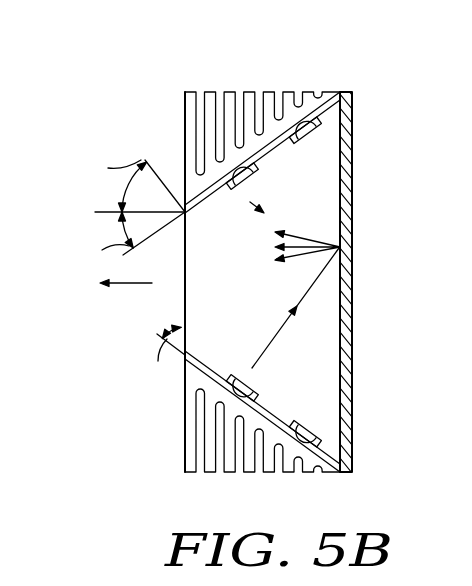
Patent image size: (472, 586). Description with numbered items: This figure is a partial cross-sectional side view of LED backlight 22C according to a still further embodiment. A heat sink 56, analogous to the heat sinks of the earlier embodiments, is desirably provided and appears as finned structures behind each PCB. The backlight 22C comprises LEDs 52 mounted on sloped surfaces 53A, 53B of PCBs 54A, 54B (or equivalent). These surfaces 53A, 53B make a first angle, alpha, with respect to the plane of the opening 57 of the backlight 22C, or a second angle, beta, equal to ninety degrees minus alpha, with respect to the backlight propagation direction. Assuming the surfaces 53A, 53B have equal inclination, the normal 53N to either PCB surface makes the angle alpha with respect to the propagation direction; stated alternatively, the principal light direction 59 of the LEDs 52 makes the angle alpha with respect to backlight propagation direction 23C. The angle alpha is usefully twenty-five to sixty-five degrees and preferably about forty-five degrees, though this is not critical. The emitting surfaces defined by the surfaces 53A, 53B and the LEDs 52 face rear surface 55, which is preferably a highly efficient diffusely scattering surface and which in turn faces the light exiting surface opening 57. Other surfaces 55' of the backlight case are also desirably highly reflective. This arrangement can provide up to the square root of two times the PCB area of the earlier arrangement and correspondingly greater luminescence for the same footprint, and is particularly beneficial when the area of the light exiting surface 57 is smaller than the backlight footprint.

The LED backlight 22C is at (270, 62).
The heat sink 56 is at (228, 92).
The PCB 54A is at (296, 135).
The sloped surface 53A is at (333, 110).
The normal 53N is at (151, 162).
The LEDs 52 is at (309, 153).
The principal light direction 59 is at (250, 204).
The other surfaces 55' is at (224, 293).
The rear surface 55 is at (325, 276).
The backlight propagation direction 23C is at (133, 285).
The opening 57 is at (126, 336).
The PCB 54B is at (264, 411).
The sloped surface 53B is at (330, 452).